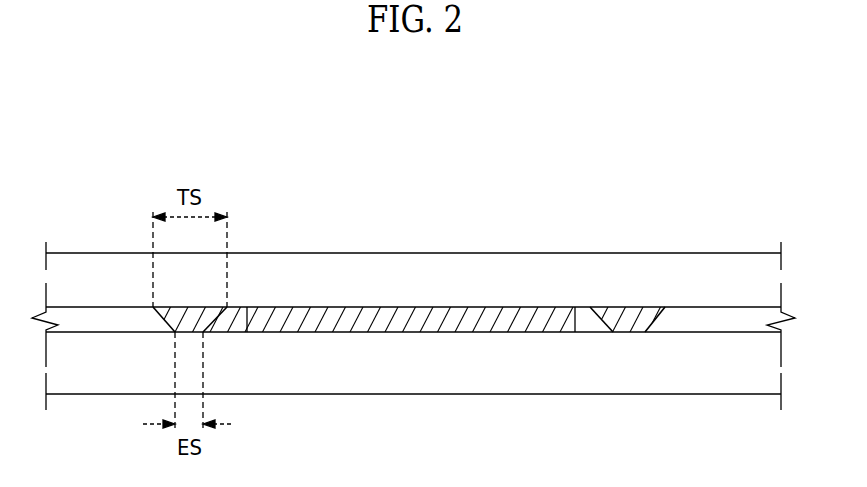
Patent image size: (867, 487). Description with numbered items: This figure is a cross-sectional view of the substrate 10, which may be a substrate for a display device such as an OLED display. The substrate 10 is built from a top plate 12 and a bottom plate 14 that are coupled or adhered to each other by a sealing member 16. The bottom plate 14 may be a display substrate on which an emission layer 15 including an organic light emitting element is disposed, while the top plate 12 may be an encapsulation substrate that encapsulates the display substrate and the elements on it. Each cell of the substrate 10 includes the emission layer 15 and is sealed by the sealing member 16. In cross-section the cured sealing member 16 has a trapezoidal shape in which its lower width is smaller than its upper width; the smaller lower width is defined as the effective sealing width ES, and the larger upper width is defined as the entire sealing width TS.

The substrate 10 is at (413, 302).
The top plate 12 is at (530, 258).
The bottom plate 14 is at (530, 393).
The emission layer 15 is at (412, 315).
The sealing member 16 is at (617, 315).